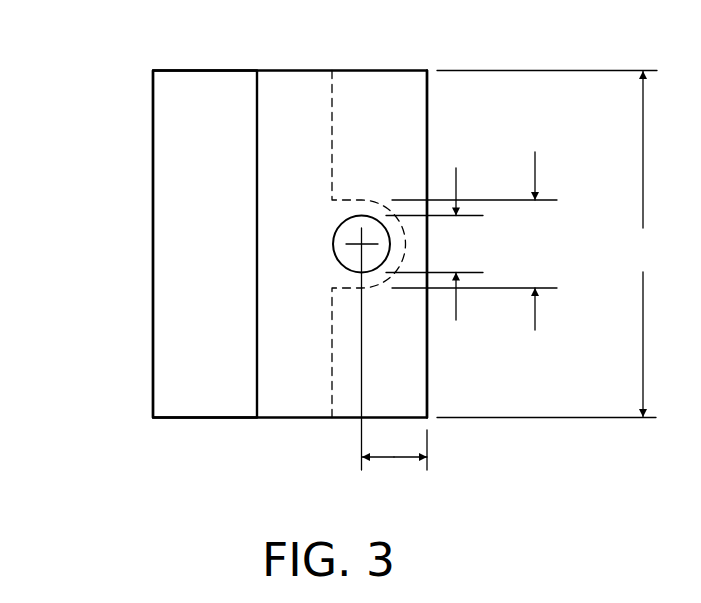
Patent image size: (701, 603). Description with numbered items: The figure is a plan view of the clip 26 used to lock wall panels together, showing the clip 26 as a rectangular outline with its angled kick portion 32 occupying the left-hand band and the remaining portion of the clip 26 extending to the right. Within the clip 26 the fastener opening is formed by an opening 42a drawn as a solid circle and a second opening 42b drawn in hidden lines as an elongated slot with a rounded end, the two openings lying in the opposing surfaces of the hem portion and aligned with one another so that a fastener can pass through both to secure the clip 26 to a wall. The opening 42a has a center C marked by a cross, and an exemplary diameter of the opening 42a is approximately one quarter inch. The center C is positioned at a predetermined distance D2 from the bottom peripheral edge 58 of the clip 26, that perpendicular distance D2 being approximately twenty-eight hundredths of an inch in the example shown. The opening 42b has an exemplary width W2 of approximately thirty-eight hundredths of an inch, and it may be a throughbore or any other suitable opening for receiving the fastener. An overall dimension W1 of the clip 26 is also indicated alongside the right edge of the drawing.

The clip 26 is at (121, 287).
The angled kick portion 32 is at (176, 147).
The opening 42a is at (334, 253).
The opening 42b is at (352, 199).
The center C is at (345, 220).
The bottom peripheral edge 58 is at (427, 383).
The overall width W1 is at (547, 244).
The width W2 is at (535, 172).
The predetermined distance D2 is at (394, 460).